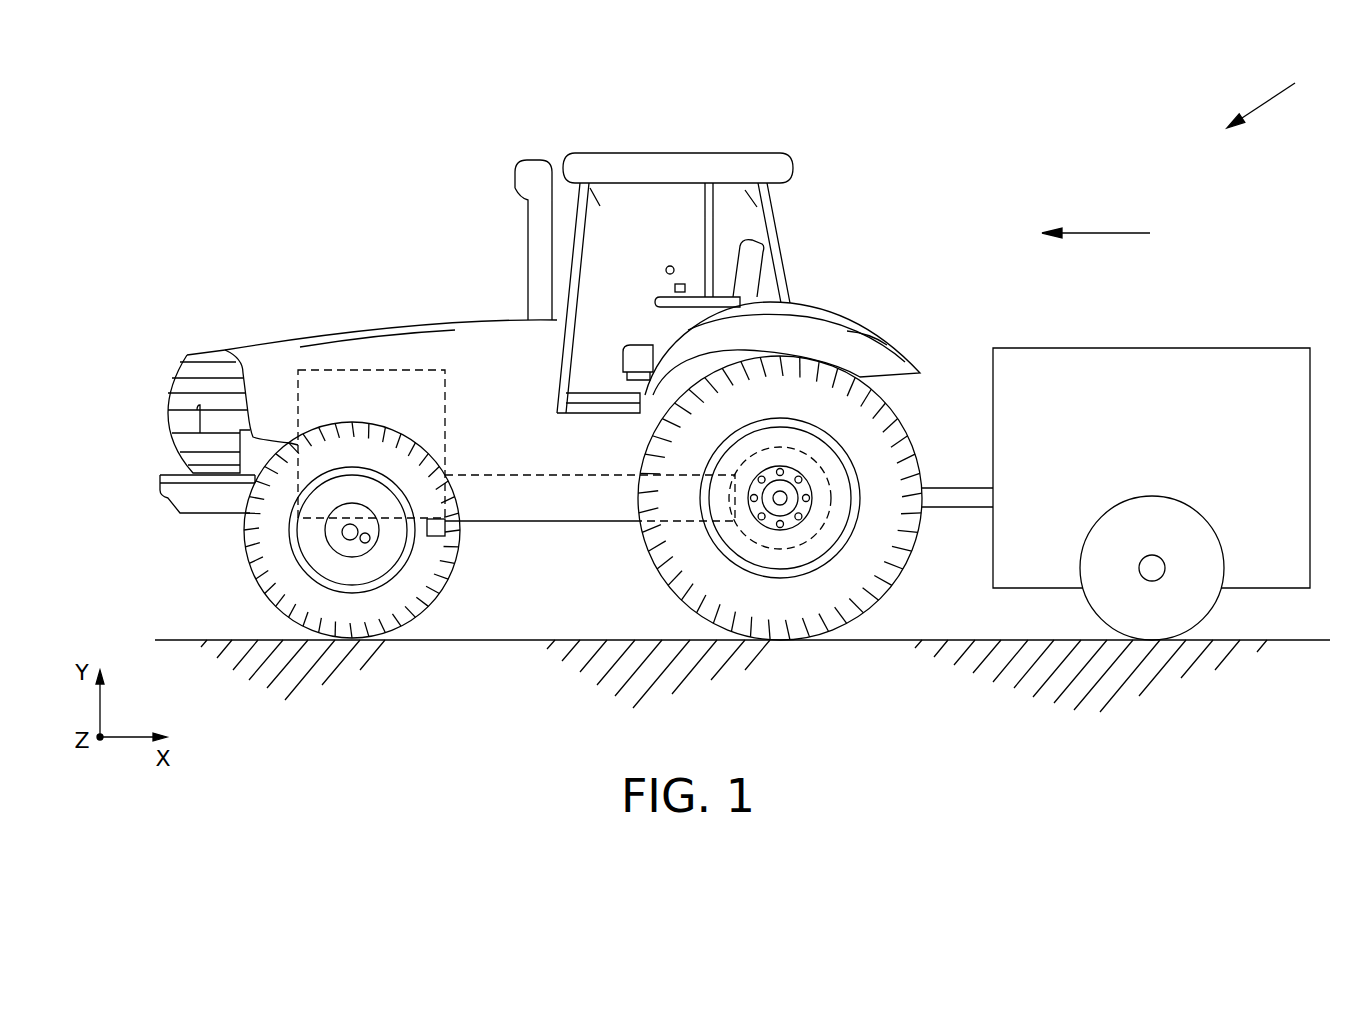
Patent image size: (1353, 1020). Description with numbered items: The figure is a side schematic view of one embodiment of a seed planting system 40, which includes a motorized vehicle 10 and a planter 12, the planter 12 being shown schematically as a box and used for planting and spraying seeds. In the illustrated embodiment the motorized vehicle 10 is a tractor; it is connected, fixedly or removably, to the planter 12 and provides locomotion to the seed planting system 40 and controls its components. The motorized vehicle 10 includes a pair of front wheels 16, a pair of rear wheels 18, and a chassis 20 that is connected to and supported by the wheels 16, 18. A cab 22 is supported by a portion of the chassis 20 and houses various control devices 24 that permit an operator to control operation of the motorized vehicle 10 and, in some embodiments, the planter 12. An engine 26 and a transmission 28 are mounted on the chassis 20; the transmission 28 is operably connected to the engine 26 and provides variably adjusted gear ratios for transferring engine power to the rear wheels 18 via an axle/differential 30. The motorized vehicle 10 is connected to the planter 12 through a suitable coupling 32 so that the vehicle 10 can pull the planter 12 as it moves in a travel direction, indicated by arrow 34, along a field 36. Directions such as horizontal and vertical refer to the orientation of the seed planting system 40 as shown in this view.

The motorized vehicle 10 is at (365, 194).
The planter 12 is at (1158, 449).
The front wheels 16 is at (247, 562).
The rear wheels 18 is at (893, 573).
The chassis 20 is at (590, 522).
The cab 22 is at (783, 236).
The control devices 24 is at (668, 266).
The engine 26 is at (345, 370).
The transmission 28 is at (535, 476).
The axle/differential 30 is at (827, 467).
The coupling 32 is at (936, 507).
The arrow 34 is at (1110, 233).
The field 36 is at (1132, 683).
The seed planting system 40 is at (1277, 93).